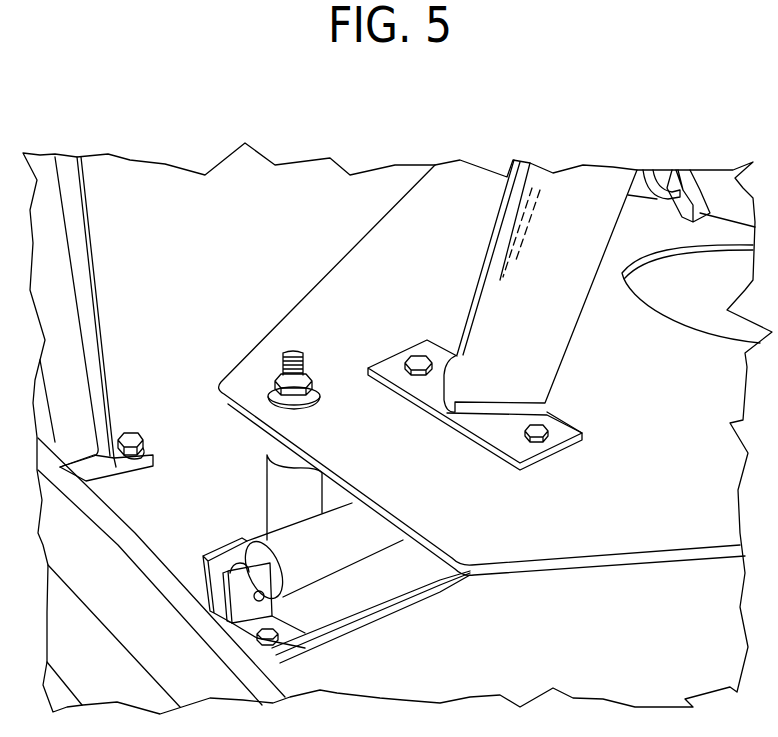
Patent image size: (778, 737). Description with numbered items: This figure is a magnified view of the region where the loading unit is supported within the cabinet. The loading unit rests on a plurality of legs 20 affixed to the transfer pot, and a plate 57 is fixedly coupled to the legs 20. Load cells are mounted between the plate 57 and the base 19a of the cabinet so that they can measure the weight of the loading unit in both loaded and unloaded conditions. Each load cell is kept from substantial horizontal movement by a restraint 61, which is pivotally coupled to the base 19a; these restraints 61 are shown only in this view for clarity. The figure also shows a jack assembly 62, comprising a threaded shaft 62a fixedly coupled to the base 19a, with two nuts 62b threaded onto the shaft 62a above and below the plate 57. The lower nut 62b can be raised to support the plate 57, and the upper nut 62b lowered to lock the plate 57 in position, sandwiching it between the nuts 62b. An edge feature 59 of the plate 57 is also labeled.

The plate 57 is at (638, 513).
The leg 20 is at (543, 358).
The jack assembly 62 is at (252, 404).
The threaded shaft 62a is at (296, 352).
The nut 62b is at (312, 382).
The restraint 61 is at (332, 551).
The plate edge flange 59 is at (407, 533).
The base 19a is at (450, 657).